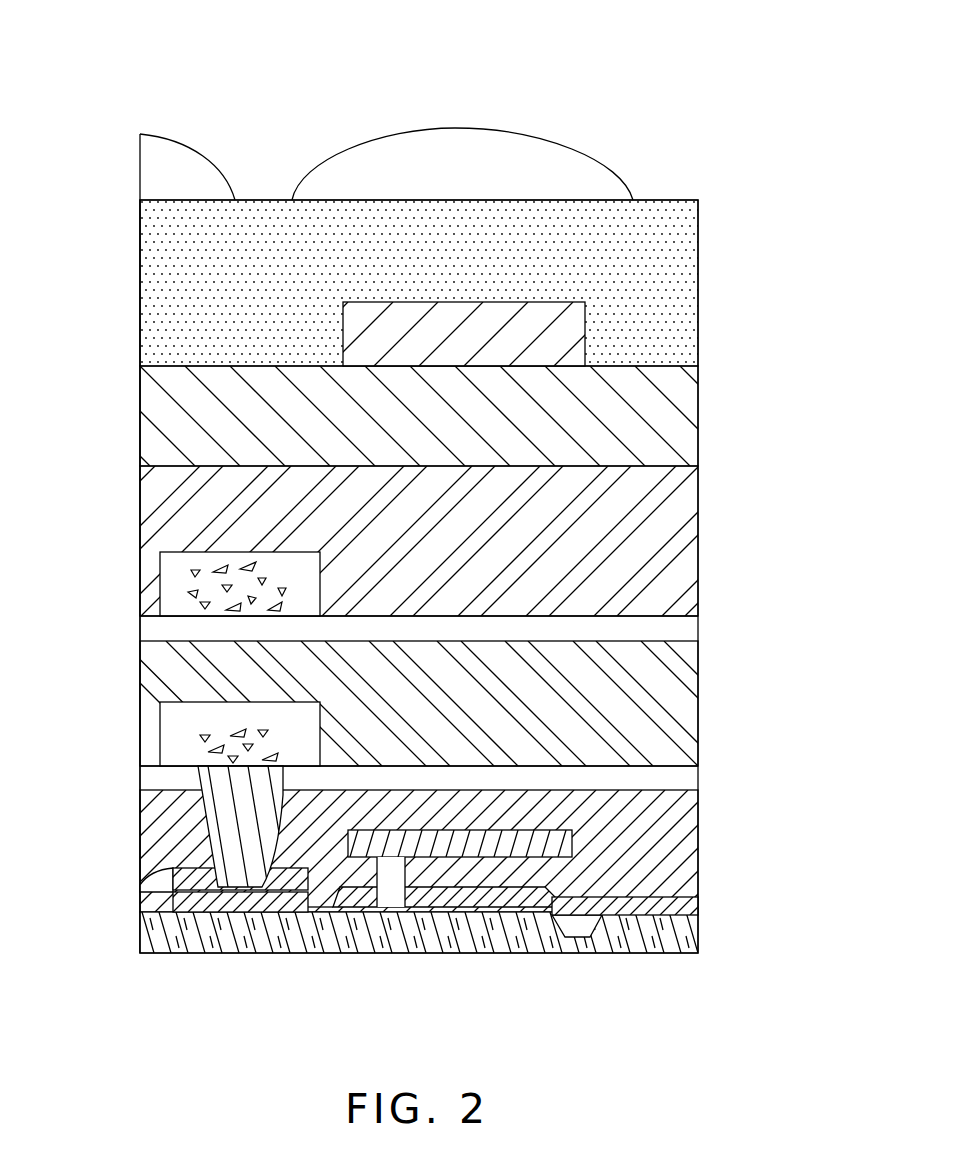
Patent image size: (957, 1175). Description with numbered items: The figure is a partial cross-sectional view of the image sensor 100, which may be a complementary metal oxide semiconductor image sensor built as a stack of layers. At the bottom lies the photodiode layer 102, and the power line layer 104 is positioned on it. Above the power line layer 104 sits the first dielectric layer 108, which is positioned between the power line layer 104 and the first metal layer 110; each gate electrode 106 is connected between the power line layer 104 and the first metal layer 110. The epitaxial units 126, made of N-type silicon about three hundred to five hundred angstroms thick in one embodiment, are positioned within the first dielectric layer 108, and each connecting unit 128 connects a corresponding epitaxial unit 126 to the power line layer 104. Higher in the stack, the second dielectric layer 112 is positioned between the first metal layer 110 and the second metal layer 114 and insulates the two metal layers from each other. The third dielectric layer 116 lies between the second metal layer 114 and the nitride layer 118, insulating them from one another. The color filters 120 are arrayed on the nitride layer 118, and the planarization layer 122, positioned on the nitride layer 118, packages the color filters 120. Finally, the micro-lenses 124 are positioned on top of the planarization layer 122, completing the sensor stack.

The image sensor 100 is at (248, 68).
The photodiode layer 102 is at (168, 934).
The power line layer 104 is at (178, 878).
The gate electrode 106 is at (220, 820).
The first dielectric layer 108 is at (670, 818).
The first metal layer 110 is at (180, 740).
The second dielectric layer 112 is at (653, 688).
The second metal layer 114 is at (180, 582).
The third dielectric layer 116 is at (650, 548).
The nitride layer 118 is at (668, 425).
The color filter 120 is at (568, 337).
The planarization layer 122 is at (668, 290).
The micro-lens 124 is at (540, 157).
The epitaxial unit 126 is at (577, 845).
The connecting unit 128 is at (392, 865).